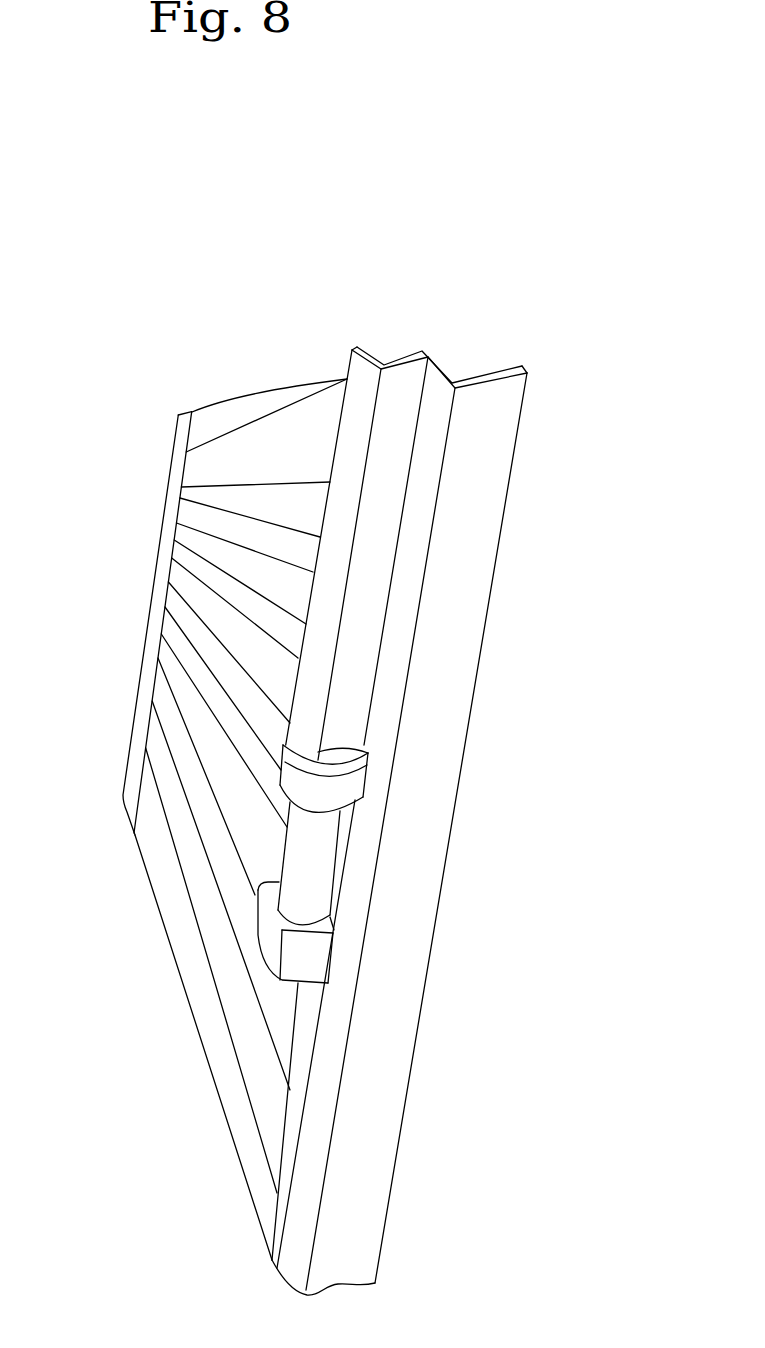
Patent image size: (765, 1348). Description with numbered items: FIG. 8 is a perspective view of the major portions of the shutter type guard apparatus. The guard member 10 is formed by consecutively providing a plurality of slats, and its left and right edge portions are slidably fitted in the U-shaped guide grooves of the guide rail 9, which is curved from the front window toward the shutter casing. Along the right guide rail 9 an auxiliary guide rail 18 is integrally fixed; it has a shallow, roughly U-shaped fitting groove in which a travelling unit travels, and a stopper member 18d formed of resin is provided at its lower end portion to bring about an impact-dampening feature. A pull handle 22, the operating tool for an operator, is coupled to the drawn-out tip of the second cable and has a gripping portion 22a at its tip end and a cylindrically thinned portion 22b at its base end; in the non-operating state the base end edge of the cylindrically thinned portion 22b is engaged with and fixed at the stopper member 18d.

The guard member 10 is at (220, 617).
The guide rail 9 is at (450, 640).
The auxiliary guide rail 18 is at (345, 711).
The stopper member 18d is at (342, 797).
The pull handle 22 is at (409, 981).
The gripping portion 22a is at (292, 968).
The cylindrically thinned portion 22b is at (312, 877).